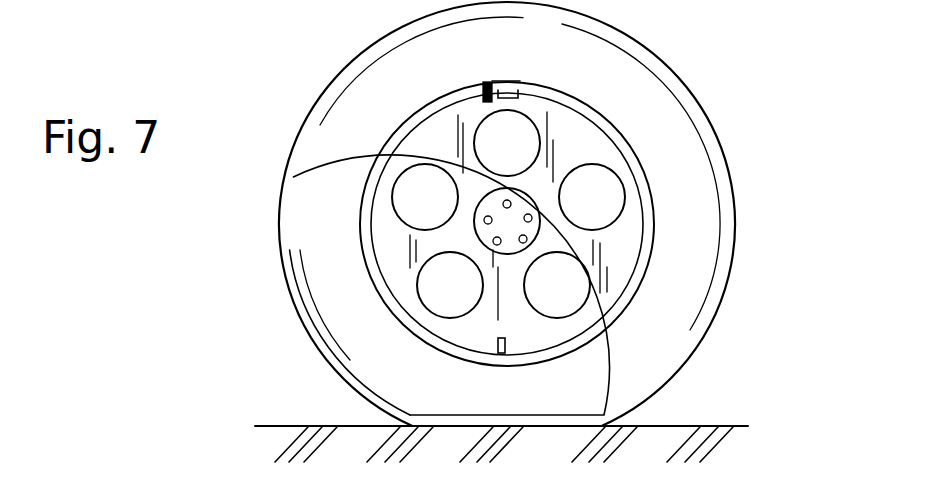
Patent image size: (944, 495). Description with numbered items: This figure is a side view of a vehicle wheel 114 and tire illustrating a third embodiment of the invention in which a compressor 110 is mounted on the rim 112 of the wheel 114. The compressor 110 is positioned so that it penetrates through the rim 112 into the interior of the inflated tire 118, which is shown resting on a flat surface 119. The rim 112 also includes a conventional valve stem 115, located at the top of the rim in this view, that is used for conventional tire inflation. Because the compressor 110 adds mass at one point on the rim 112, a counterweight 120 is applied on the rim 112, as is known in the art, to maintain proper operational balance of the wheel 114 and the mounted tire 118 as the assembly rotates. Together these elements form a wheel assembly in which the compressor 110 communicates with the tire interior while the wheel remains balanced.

The compressor 110 is at (505, 345).
The rim 112 is at (367, 255).
The wheel 114 is at (603, 147).
The valve stem 115 is at (483, 82).
The inflated tire 118 is at (682, 207).
The flat surface 119 is at (313, 425).
The counterweight 120 is at (520, 90).